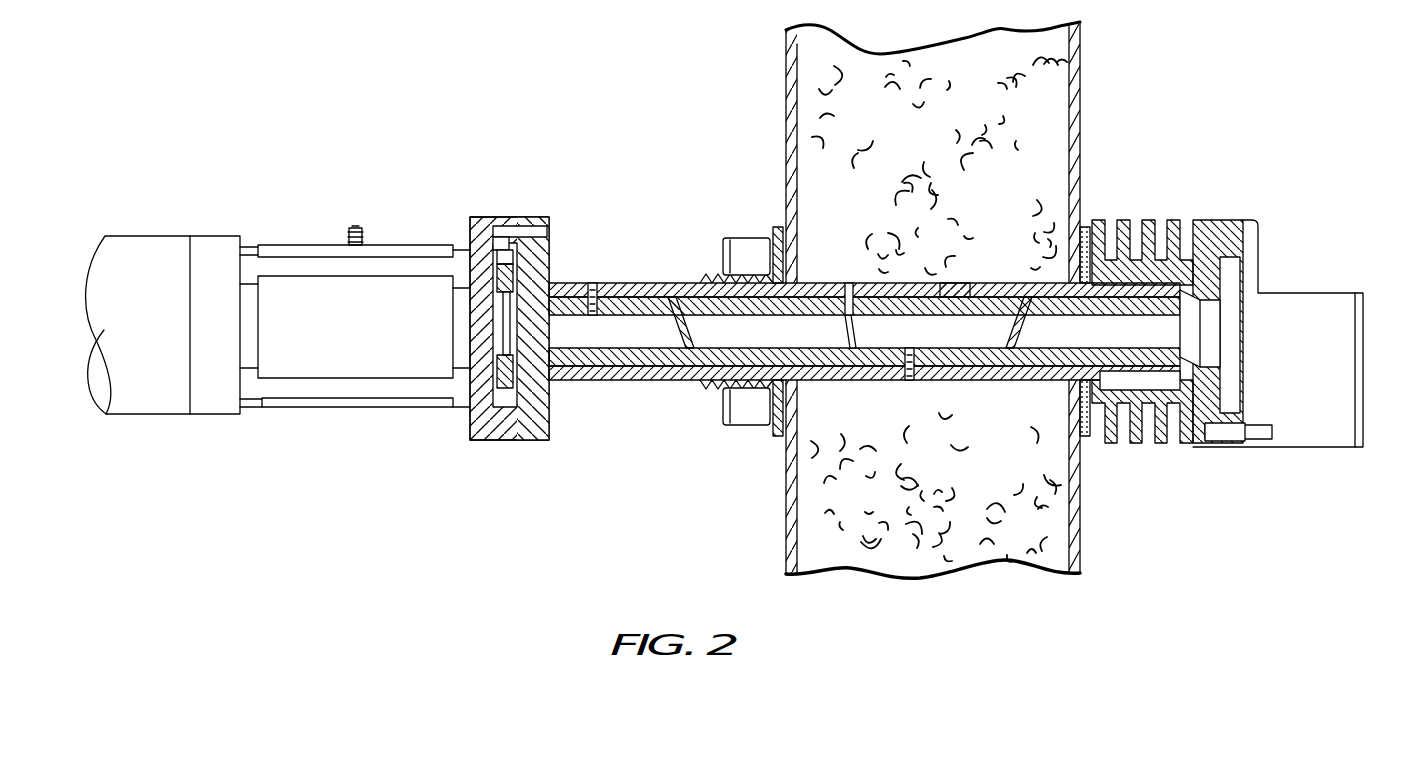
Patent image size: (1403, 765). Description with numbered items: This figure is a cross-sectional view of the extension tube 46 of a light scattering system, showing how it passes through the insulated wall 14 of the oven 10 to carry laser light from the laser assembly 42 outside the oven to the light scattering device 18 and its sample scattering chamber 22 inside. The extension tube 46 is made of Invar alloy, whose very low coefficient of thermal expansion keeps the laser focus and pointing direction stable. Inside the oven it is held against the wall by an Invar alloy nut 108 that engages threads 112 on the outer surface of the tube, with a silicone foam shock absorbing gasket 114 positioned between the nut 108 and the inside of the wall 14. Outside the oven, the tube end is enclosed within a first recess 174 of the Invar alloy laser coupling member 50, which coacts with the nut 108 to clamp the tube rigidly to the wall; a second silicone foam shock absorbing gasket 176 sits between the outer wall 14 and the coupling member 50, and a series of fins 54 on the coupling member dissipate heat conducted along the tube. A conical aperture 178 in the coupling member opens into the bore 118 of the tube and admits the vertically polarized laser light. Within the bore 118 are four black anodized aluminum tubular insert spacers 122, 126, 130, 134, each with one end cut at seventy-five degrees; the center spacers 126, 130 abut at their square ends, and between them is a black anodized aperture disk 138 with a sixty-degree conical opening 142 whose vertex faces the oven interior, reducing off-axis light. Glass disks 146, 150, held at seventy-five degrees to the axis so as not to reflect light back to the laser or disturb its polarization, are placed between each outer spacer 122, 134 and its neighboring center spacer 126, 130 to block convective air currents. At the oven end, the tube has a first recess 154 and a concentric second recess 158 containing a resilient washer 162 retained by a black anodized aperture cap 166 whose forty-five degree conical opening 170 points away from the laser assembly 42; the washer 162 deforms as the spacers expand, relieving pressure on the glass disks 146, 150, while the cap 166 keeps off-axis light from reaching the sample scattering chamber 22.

The oven 10 is at (518, 145).
The insulated wall 14 is at (910, 134).
The light scattering device 18 is at (232, 218).
The sample scattering chamber 22 is at (297, 410).
The laser assembly 42 is at (1342, 432).
The extension tube 46 is at (633, 383).
The laser coupling member 50 is at (1208, 457).
The fins 54 is at (1150, 216).
The Invar alloy nut 108 is at (733, 424).
The threads 112 is at (706, 278).
The silicone foam shock absorbing gasket 114 is at (778, 436).
The bore 118 is at (846, 362).
The tubular insert spacer 122 is at (592, 318).
The tubular insert spacer 126 is at (696, 381).
The tubular insert spacer 130 is at (950, 296).
The tubular insert spacer 134 is at (1086, 402).
The aperture disk 138 is at (849, 292).
The conical opening 142 is at (908, 382).
The glass disk 146 is at (678, 296).
The glass disk 150 is at (1010, 360).
The first recess 154 is at (503, 257).
The second recess 158 is at (547, 275).
The resilient washer 162 is at (498, 385).
The aperture cap 166 is at (502, 340).
The conical opening 170 is at (497, 300).
The first recess 174 is at (1205, 442).
The silicone foam shock absorbing gasket 176 is at (1085, 232).
The conical aperture 178 is at (1210, 252).